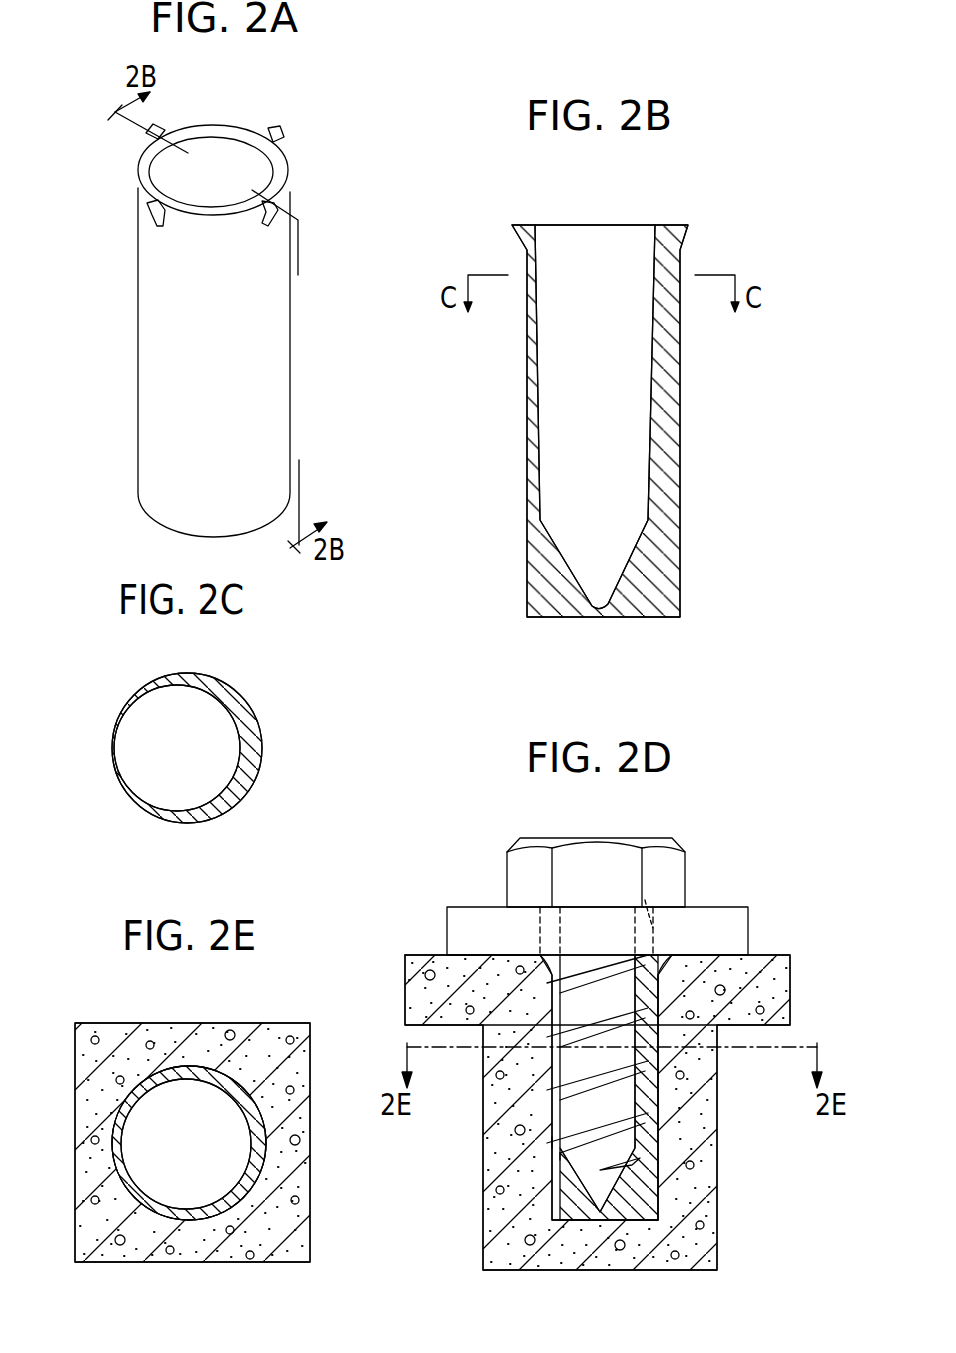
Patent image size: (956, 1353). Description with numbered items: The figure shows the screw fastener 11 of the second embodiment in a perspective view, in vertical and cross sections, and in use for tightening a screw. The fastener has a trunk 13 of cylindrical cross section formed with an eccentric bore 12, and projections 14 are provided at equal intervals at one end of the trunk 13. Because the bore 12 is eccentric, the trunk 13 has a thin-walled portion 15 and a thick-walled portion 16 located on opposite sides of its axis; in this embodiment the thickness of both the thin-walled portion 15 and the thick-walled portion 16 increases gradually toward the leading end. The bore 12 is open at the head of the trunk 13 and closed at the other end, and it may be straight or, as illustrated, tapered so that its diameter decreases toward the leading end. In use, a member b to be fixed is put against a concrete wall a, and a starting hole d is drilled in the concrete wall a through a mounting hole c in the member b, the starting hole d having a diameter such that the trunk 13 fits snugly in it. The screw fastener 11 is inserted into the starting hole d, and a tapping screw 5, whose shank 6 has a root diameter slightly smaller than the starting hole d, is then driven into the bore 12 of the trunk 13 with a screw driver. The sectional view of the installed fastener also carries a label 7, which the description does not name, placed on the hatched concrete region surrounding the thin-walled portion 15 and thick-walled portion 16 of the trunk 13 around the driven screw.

In FIG. 2D, the tapping screw 5 is at (690, 860).
In FIG. 2D, the shank 6 is at (580, 1105).
In FIG. 2D, the concrete base 7 is at (580, 1128).
In FIG. 2E, the concrete base 7 is at (100, 1094).
In FIG. 2A, the screw fastener 11 is at (136, 320).
In FIG. 2B, the screw fastener 11 is at (683, 440).
In FIG. 2C, the screw fastener 11 is at (250, 794).
In FIG. 2D, the screw fastener 11 is at (666, 1105).
In FIG. 2E, the screw fastener 11 is at (253, 1194).
In FIG. 2A, the eccentric bore 12 is at (176, 182).
In FIG. 2B, the eccentric bore 12 is at (563, 450).
In FIG. 2C, the eccentric bore 12 is at (200, 718).
In FIG. 2E, the eccentric bore 12 is at (172, 1212).
In FIG. 2A, the trunk 13 is at (158, 411).
In FIG. 2B, the trunk 13 is at (668, 510).
In FIG. 2C, the trunk 13 is at (208, 812).
In FIG. 2D, the trunk 13 is at (648, 1192).
In FIG. 2E, the trunk 13 is at (226, 1205).
In FIG. 2A, the projections 14 is at (292, 182).
In FIG. 2B, the projections 14 is at (522, 228).
In FIG. 2B, the thin-walled portion 15 is at (528, 360).
In FIG. 2C, the thin-walled portion 15 is at (113, 768).
In FIG. 2D, the thin-walled portion 15 is at (555, 1060).
In FIG. 2E, the thin-walled portion 15 is at (118, 1158).
In FIG. 2B, the thick-walled portion 16 is at (670, 366).
In FIG. 2C, the thick-walled portion 16 is at (262, 742).
In FIG. 2D, the thick-walled portion 16 is at (670, 1000).
In FIG. 2E, the thick-walled portion 16 is at (250, 1090).
In FIG. 2D, the concrete wall a is at (700, 1055).
In FIG. 2D, the member to be fixed b is at (736, 930).
In FIG. 2D, the mounting hole c is at (650, 900).
In FIG. 2D, the starting hole d is at (660, 1150).